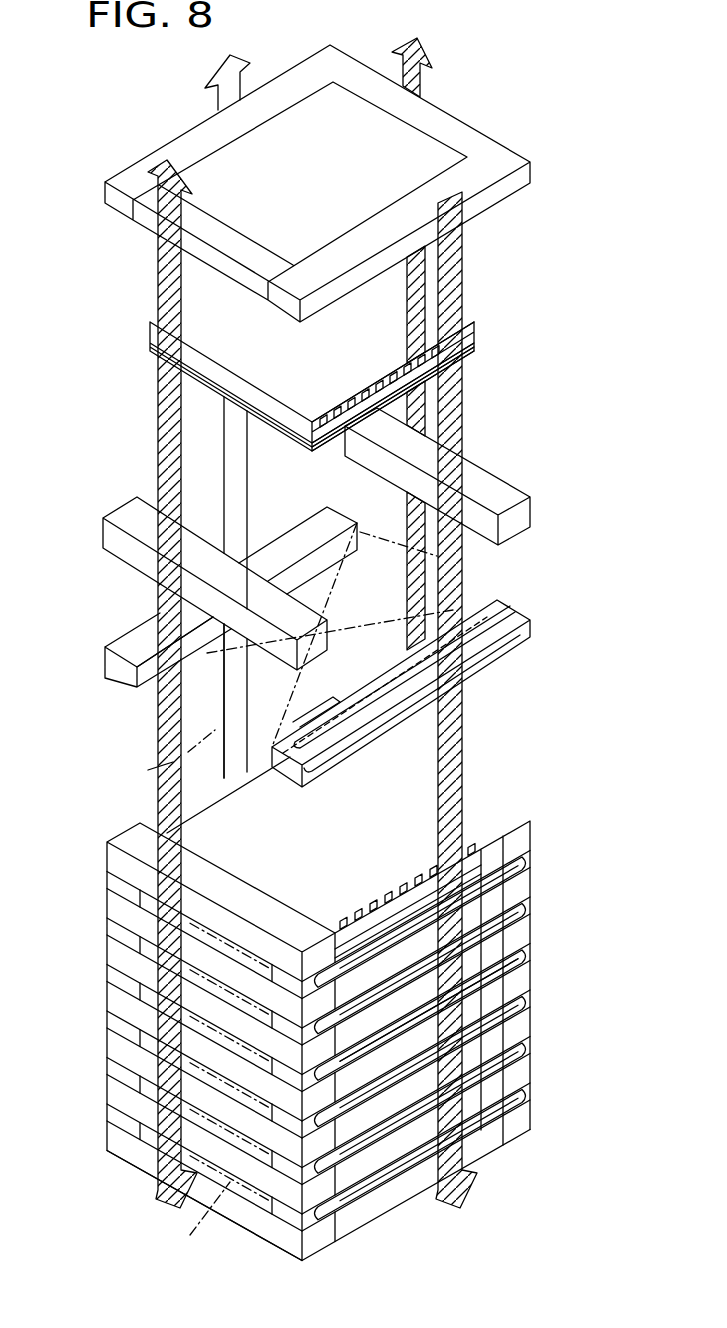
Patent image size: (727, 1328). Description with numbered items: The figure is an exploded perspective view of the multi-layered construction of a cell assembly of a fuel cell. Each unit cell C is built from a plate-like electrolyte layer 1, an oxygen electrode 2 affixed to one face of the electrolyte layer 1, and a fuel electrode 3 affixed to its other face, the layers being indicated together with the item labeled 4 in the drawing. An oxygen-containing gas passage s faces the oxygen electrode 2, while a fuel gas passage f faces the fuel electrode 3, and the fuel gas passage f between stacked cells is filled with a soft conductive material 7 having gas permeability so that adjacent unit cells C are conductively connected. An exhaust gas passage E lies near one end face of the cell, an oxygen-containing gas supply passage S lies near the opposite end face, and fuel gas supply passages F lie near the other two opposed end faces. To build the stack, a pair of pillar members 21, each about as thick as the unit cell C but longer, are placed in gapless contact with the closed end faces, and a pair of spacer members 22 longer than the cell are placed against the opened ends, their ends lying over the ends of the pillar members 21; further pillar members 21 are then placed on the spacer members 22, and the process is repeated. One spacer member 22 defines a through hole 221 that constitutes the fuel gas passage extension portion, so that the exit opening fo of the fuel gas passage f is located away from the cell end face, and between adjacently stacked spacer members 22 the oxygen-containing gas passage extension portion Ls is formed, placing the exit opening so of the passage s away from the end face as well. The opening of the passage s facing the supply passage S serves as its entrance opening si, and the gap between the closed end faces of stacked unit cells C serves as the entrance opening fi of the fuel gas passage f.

The pillar member 21 is at (112, 510).
The spacer member 22 is at (120, 645).
The through hole 221 is at (517, 647).
The soft conductive material 7 is at (155, 688).
The electrolyte layer 1 is at (478, 342).
The oxygen electrode 2 is at (478, 337).
The fuel electrode 3 is at (478, 352).
The upper surface layer 4 is at (478, 328).
The unit cell C is at (562, 297).
The oxygen-containing gas supply passage S is at (213, 96).
The fuel gas supply passage F is at (425, 80).
The exhaust gas passage E is at (462, 252).
The oxygen-containing gas passage s is at (360, 405).
The entrance opening of the fuel gas passage fi is at (485, 585).
The exit opening of the fuel gas passage fo is at (480, 663).
The fuel gas passage f is at (153, 700).
The entrance opening of the oxygen-containing gas passage si is at (210, 785).
The exit opening of the oxygen-containing gas passage so is at (530, 852).
The oxygen-containing gas passage extension portion Ls is at (486, 1053).